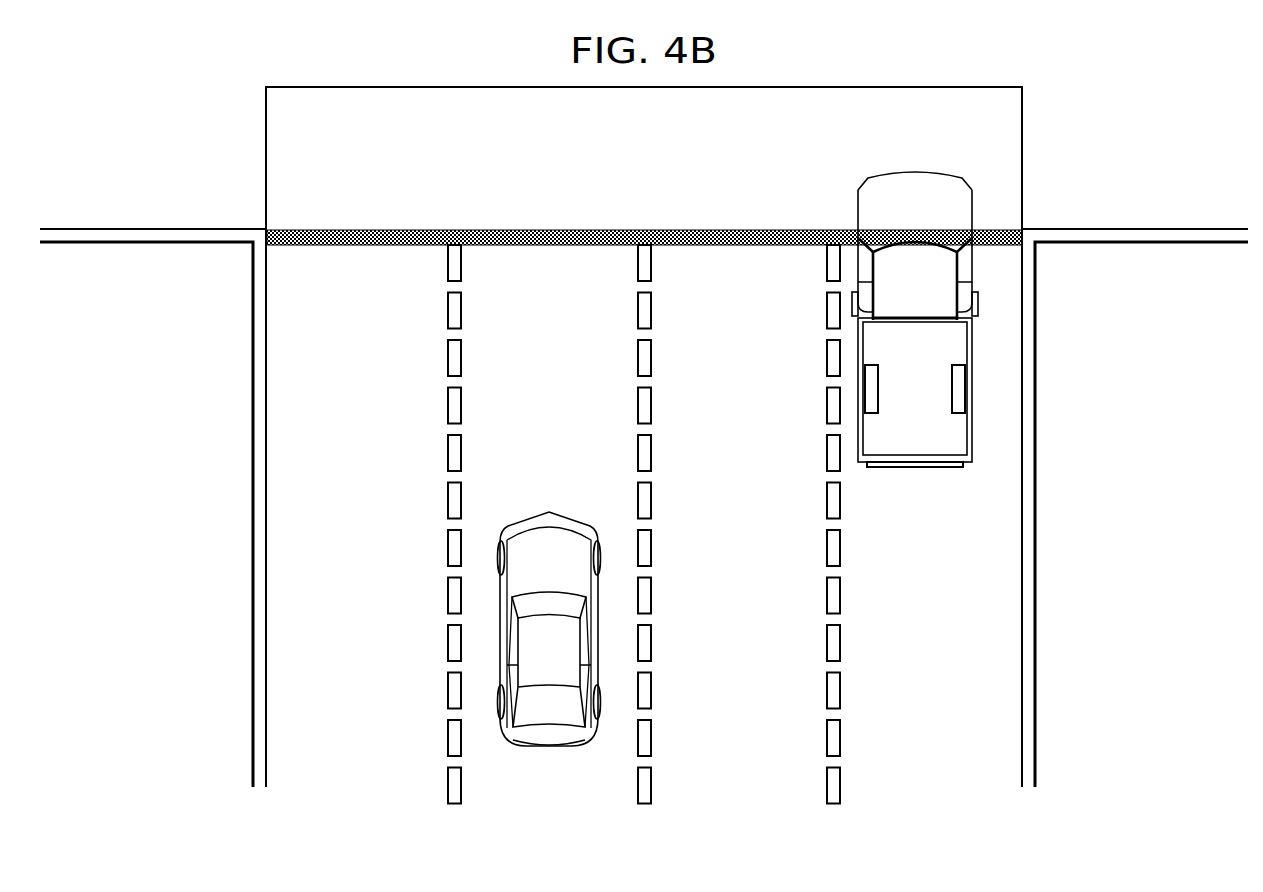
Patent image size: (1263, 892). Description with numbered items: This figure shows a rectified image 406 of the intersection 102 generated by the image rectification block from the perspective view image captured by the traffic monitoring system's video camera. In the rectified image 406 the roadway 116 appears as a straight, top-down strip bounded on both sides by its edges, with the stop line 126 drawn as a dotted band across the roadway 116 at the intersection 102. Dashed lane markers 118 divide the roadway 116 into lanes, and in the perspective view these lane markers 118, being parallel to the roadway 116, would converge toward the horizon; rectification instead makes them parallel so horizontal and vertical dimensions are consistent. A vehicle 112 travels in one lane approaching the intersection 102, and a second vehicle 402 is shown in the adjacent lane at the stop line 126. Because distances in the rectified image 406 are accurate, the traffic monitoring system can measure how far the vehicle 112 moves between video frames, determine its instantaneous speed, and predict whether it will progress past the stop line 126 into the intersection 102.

The rectified image 406 is at (866, 70).
The intersection 102 is at (997, 129).
The roadway 116 is at (972, 763).
The stop line 126 is at (613, 228).
The lane markers 118 is at (446, 548).
The truck (other vehicle) 402 is at (913, 470).
The vehicle 112 is at (545, 750).